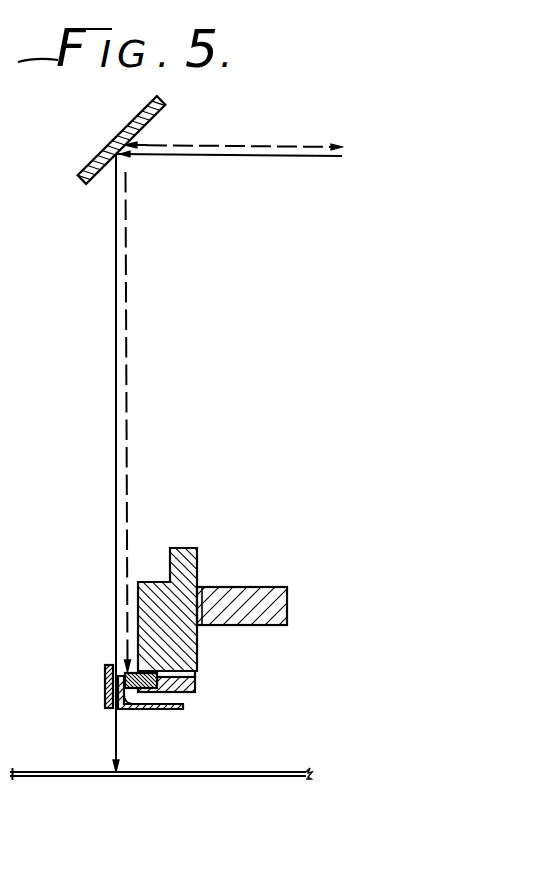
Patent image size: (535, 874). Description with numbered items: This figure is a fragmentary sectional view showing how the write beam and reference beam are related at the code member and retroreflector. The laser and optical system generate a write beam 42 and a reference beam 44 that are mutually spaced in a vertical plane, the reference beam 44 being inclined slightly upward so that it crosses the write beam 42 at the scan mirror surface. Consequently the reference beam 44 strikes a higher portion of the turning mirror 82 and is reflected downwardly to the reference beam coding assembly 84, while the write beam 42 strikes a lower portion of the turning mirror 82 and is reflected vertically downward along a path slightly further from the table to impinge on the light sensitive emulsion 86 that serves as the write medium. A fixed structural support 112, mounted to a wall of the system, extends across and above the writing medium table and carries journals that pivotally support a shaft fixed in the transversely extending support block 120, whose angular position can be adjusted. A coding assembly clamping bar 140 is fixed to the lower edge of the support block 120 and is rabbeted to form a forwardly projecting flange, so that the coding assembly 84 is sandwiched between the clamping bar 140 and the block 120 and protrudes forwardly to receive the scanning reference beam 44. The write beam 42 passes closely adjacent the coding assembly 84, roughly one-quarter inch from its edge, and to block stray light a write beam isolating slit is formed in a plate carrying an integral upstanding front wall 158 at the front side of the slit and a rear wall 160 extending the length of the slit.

The turning mirror 82 is at (96, 157).
The write beam 42 is at (115, 733).
The reference beam 44 is at (129, 503).
The support block 120 is at (190, 637).
The fixed structural support 112 is at (272, 592).
The coding assembly clamping bar 140 is at (196, 684).
The reference beam coding assembly 84 is at (150, 677).
The front wall 158 is at (105, 674).
The rear wall 160 is at (122, 703).
The light sensitive emulsion 86 is at (50, 772).